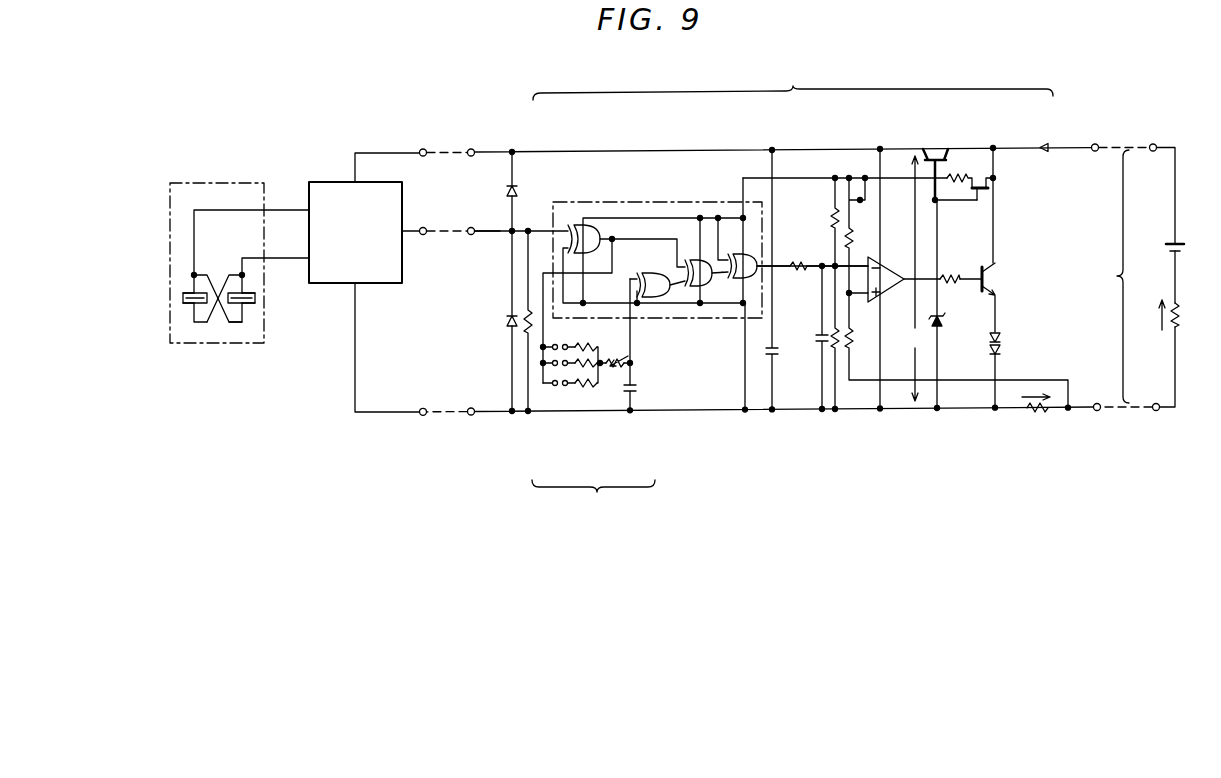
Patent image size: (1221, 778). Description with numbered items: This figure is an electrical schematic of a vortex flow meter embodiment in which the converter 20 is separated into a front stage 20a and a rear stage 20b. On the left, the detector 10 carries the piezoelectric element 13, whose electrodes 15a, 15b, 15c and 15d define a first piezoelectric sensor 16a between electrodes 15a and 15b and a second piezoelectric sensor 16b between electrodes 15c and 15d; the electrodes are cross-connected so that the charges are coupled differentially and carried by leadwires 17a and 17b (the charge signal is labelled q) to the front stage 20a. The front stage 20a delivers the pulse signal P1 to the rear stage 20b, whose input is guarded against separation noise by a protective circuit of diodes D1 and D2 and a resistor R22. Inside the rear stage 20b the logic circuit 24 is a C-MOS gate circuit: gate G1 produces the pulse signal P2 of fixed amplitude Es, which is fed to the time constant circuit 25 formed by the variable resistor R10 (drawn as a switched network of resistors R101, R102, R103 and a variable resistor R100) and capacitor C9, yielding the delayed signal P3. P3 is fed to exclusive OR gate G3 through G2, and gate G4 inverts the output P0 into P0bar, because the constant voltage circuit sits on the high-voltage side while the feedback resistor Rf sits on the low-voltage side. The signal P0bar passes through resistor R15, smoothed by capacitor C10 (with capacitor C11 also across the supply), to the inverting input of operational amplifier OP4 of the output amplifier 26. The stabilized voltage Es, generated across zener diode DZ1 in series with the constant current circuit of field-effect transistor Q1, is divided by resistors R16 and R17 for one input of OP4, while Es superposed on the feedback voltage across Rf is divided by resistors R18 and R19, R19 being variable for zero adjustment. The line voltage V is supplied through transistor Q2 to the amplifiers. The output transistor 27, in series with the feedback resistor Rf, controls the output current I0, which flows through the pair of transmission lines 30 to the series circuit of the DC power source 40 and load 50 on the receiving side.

The detector 10 is at (193, 192).
The piezoelectric element 13 is at (183, 298).
The electrode 15a is at (188, 292).
The electrode 15b is at (188, 304).
The electrode 15c is at (250, 292).
The electrode 15d is at (250, 304).
The first piezoelectric sensor 16a is at (192, 323).
The second piezoelectric sensor 16b is at (246, 323).
The leadwire 17a is at (194, 228).
The leadwire 17b is at (240, 260).
The signal q is at (258, 218).
The converter 20 is at (608, 80).
The front stage 20a is at (355, 232).
The rear stage 20b is at (866, 72).
The pulse signal P1 is at (458, 246).
The pulse signal P2 is at (612, 236).
The signal P3 is at (633, 361).
The pulse signal P0 is at (712, 290).
The inverted output pulse signal P0bar is at (778, 268).
The diode D1 is at (497, 191).
The diode D2 is at (510, 318).
The resistor R22 is at (526, 337).
The logic circuit 24 is at (650, 192).
The exclusive OR gate G1 is at (580, 232).
The exclusive OR gate G2 is at (696, 289).
The exclusive OR gate G3 is at (657, 299).
The gate G4 is at (738, 281).
The time constant circuit 25 is at (618, 413).
The variable resistor R10 is at (593, 501).
The variable resistor R100 is at (616, 373).
The resistor R101 is at (577, 351).
The resistor R102 is at (581, 366).
The resistor R103 is at (588, 385).
The capacitor C9 is at (637, 388).
The capacitor C10 is at (816, 338).
The capacitor C11 is at (780, 355).
The resistor R15 is at (800, 264).
The voltage-dividing resistor R16 is at (851, 349).
The voltage-dividing resistor R17 is at (833, 216).
The voltage-dividing resistor R18 is at (835, 349).
The variable voltage-dividing resistor R19 is at (851, 230).
The output amplifier 26 is at (890, 251).
The operational amplifier OP4 is at (884, 280).
The line voltage V is at (914, 278).
The field-effect transistor Q1 is at (990, 173).
The transistor Q2 is at (934, 157).
The output transistor 27 is at (1002, 286).
The zener diode DZ1 is at (945, 313).
The stabilized voltage Es is at (939, 203).
The feedback resistor Rf is at (1044, 412).
The output current I0 is at (1032, 394).
The transmission lines 30 is at (1139, 276).
The DC power source 40 is at (1170, 246).
The load 50 is at (1176, 330).